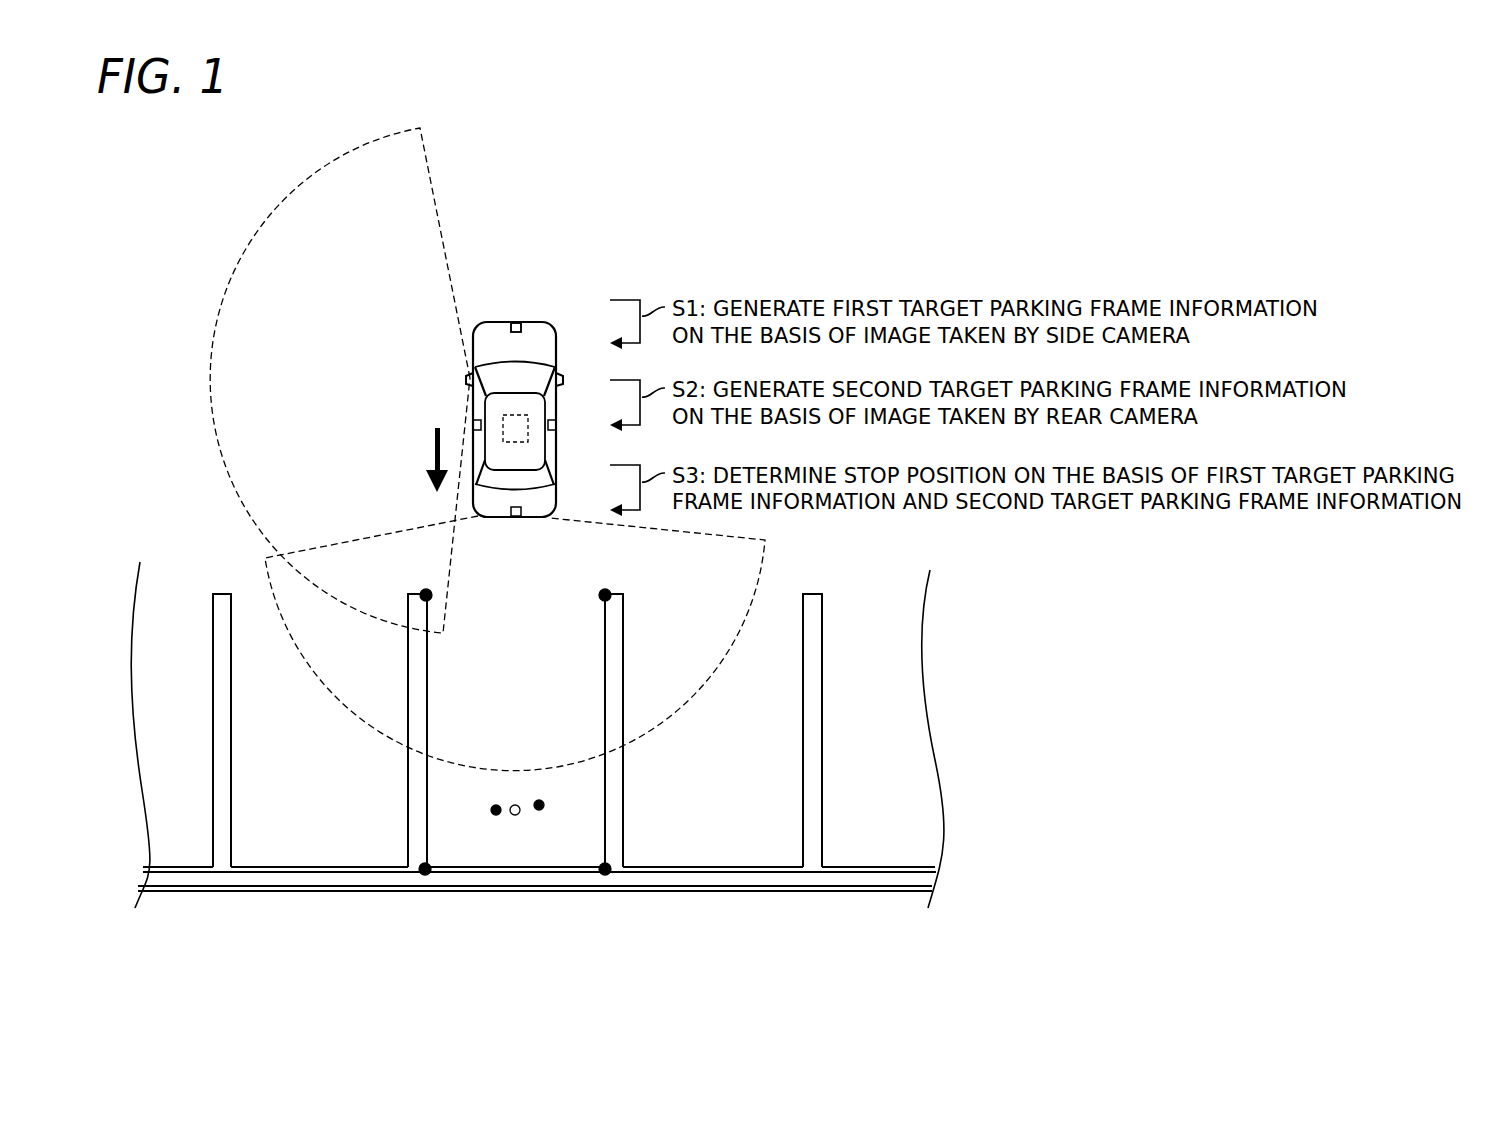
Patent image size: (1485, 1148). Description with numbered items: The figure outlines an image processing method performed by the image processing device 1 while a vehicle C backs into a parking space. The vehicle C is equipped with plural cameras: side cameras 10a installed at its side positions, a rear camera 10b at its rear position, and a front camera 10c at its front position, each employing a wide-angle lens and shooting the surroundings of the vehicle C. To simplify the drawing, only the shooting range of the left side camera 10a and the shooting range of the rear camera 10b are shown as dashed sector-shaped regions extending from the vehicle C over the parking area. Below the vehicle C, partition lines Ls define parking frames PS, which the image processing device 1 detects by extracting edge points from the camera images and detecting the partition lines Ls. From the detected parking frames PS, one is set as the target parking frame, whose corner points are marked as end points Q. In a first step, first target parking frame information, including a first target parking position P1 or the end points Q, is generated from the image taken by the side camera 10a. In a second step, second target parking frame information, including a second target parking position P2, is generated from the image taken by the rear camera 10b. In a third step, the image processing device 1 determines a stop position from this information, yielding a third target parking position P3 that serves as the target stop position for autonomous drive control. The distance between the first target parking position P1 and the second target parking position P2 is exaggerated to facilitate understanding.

The image processing device 1 is at (529, 430).
The side camera 10a is at (562, 372).
The rear camera 10b is at (516, 518).
The front camera 10c is at (515, 322).
The vehicle C is at (532, 322).
The parking frame PS is at (765, 640).
The end points Q is at (421, 592).
The partition line Ls is at (625, 790).
The first target parking position P1 is at (494, 815).
The second target parking position P2 is at (541, 811).
The third target parking position P3 is at (515, 816).